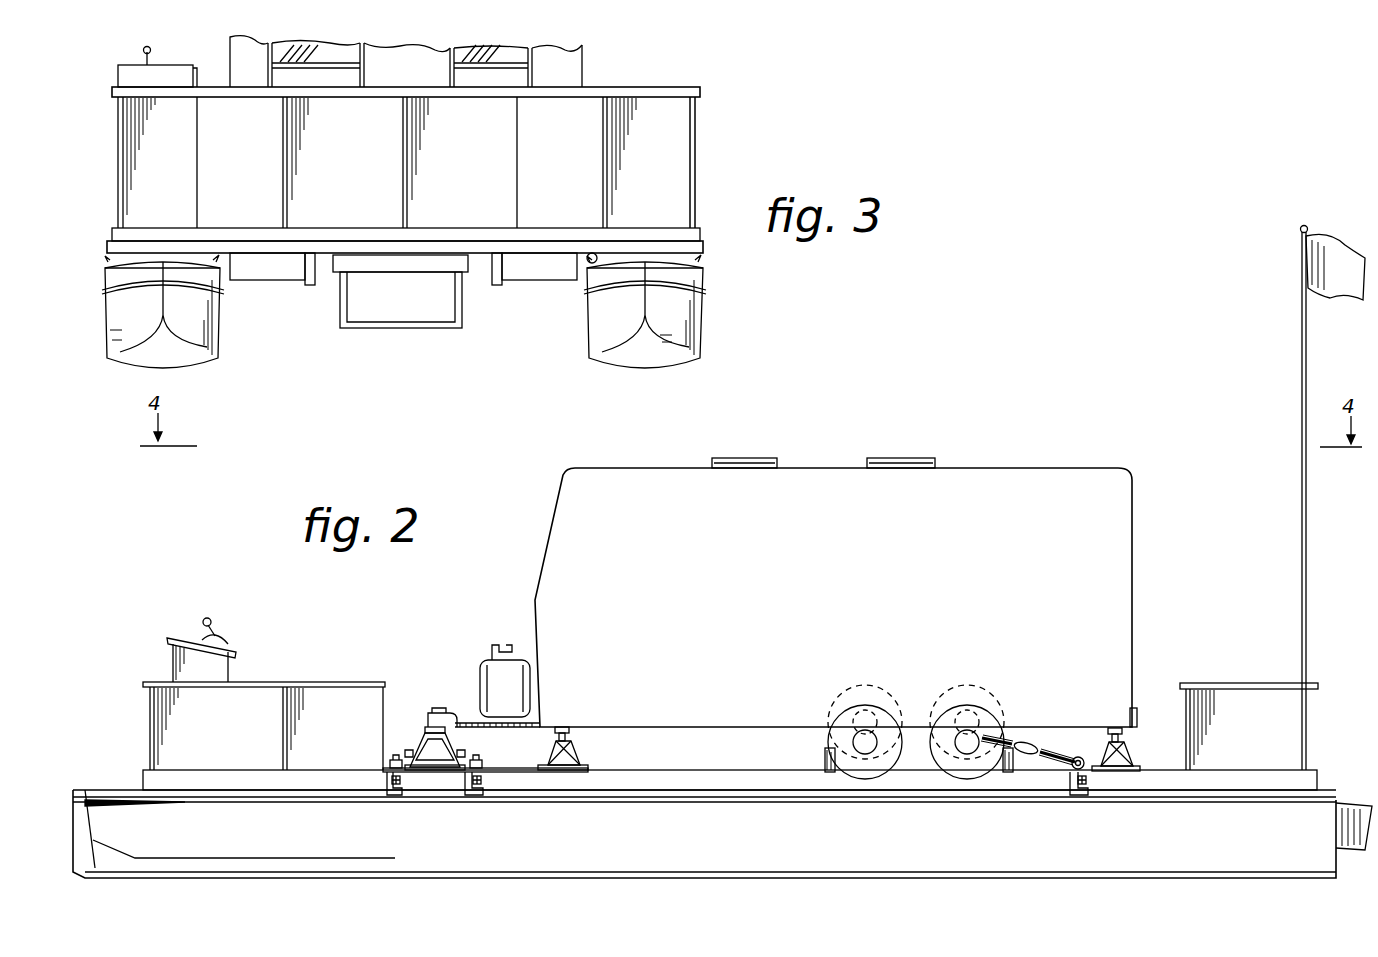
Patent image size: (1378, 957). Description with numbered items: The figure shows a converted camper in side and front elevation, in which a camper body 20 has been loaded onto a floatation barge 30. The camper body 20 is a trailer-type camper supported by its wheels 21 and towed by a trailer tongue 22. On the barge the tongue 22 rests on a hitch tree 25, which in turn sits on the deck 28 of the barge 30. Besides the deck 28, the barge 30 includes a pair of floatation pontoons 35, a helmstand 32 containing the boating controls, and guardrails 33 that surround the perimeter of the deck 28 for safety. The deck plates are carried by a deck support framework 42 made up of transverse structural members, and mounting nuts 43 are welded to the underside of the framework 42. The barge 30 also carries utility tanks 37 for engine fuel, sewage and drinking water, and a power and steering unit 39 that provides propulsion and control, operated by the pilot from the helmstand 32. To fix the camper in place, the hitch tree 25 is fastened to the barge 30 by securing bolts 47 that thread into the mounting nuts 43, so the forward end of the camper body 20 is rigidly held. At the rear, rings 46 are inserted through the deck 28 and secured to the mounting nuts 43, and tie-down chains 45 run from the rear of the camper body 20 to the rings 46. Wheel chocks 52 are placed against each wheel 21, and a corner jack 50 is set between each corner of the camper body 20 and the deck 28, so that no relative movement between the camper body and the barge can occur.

In FIG. 3, the camper body 20 is at (606, 62).
In FIG. 2, the camper body 20 is at (820, 466).
In FIG. 2, the wheels 21 is at (947, 768).
In FIG. 2, the trailer tongue 22 is at (447, 710).
In FIG. 2, the hitch tree 25 is at (426, 733).
In FIG. 2, the deck 28 is at (542, 777).
In FIG. 3, the floatation barge 30 is at (107, 242).
In FIG. 2, the floatation barge 30 is at (683, 860).
In FIG. 3, the helmstand 32 is at (140, 77).
In FIG. 3, the guardrails 33 is at (680, 147).
In FIG. 3, the floatation pontoons 35 is at (220, 327).
In FIG. 3, the utility tanks 37 is at (284, 275).
In FIG. 3, the power and steering unit 39 is at (385, 317).
In FIG. 2, the deck support framework 42 is at (389, 797).
In FIG. 2, the mounting nuts 43 is at (402, 783).
In FIG. 2, the tie-down chains 45 is at (1047, 745).
In FIG. 2, the rings 46 is at (1082, 757).
In FIG. 2, the securing bolts 47 is at (395, 762).
In FIG. 2, the corner jack 50 is at (575, 750).
In FIG. 2, the wheel chocks 52 is at (828, 752).